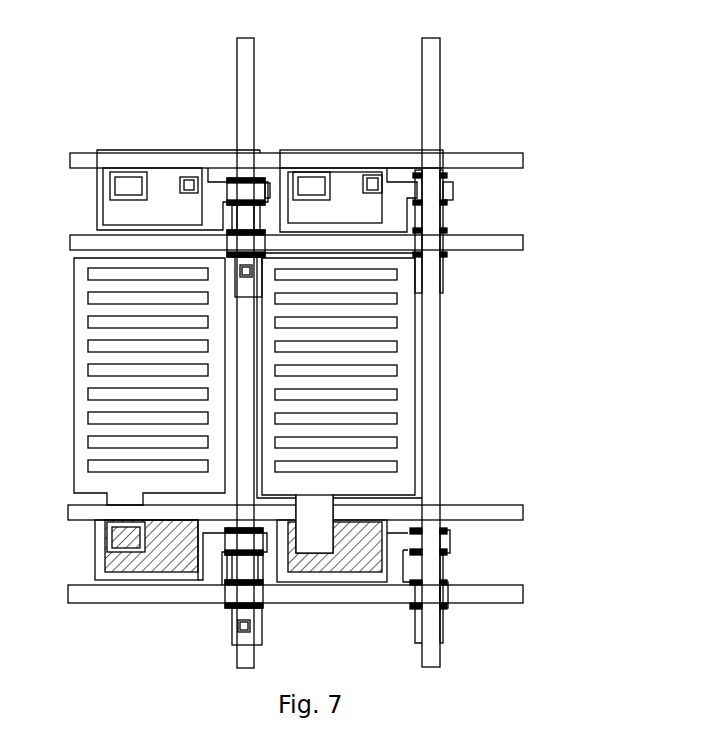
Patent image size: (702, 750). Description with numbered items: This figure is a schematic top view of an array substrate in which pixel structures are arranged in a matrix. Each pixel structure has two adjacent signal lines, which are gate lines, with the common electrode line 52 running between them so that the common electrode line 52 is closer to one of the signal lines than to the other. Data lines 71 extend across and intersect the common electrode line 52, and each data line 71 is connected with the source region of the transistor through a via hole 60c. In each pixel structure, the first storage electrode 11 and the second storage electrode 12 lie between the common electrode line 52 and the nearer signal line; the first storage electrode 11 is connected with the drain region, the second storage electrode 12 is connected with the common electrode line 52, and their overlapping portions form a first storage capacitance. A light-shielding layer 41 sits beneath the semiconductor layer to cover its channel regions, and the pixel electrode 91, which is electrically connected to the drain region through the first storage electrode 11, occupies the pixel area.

The data line 71 is at (243, 88).
The common electrode line 52 is at (485, 160).
The light-shielding layer 41 is at (448, 255).
The via hole 60c is at (445, 283).
The pixel electrode 91 is at (408, 412).
The first storage electrode 11 is at (302, 580).
The second storage electrode 12 is at (348, 575).